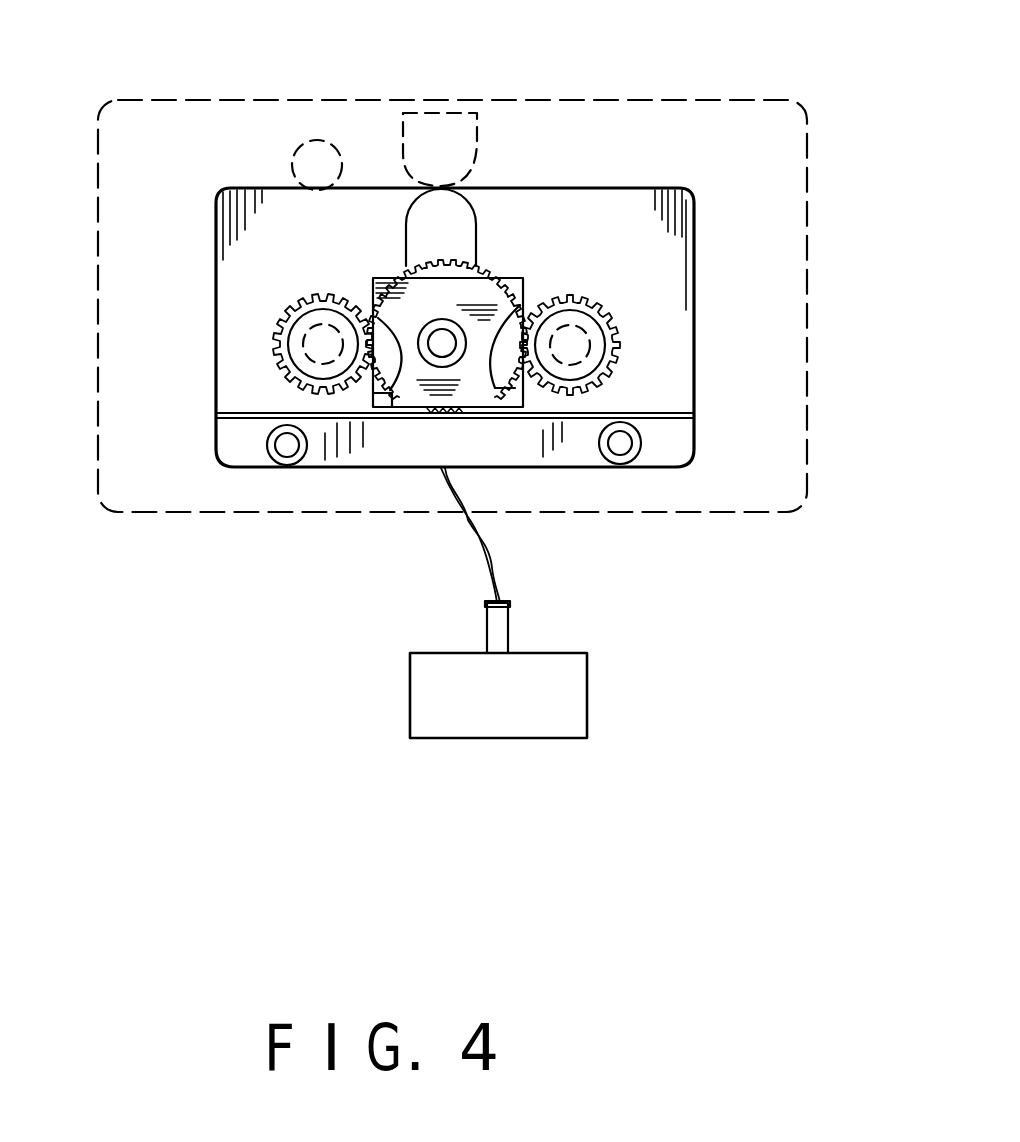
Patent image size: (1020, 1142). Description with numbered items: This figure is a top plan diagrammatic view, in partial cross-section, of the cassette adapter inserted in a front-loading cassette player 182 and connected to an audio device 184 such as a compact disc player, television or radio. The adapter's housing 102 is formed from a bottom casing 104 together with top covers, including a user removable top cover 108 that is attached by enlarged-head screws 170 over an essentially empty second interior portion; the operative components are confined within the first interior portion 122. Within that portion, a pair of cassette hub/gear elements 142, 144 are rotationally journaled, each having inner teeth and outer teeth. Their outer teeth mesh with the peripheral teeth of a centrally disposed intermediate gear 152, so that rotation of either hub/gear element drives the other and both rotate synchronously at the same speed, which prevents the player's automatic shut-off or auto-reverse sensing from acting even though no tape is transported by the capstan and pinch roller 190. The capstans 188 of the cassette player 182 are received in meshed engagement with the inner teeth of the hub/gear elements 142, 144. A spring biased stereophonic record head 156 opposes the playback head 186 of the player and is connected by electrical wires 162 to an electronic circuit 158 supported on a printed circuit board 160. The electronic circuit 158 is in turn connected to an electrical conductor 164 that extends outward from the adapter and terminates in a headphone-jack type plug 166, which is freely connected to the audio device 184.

The housing 102 is at (558, 186).
The bottom casing 104 is at (214, 262).
The user removable top cover 108 is at (678, 438).
The first interior portion 122 is at (664, 265).
The cassette hub/gear element 142 is at (605, 357).
The cassette hub/gear element 144 is at (276, 328).
The intermediate gear 152 is at (388, 390).
The record head 156 is at (478, 217).
The electronic circuit 158 is at (443, 393).
The printed circuit board 160 is at (521, 286).
The electrical wires 162 is at (391, 275).
The electrical conductor 164 is at (494, 559).
The plug 166 is at (498, 628).
The screws 170 is at (285, 457).
The cassette player 182 is at (812, 152).
The audio device 184 is at (577, 693).
The playback head 186 is at (478, 127).
The capstans 188 is at (608, 338).
The pinch roller 190 is at (320, 150).